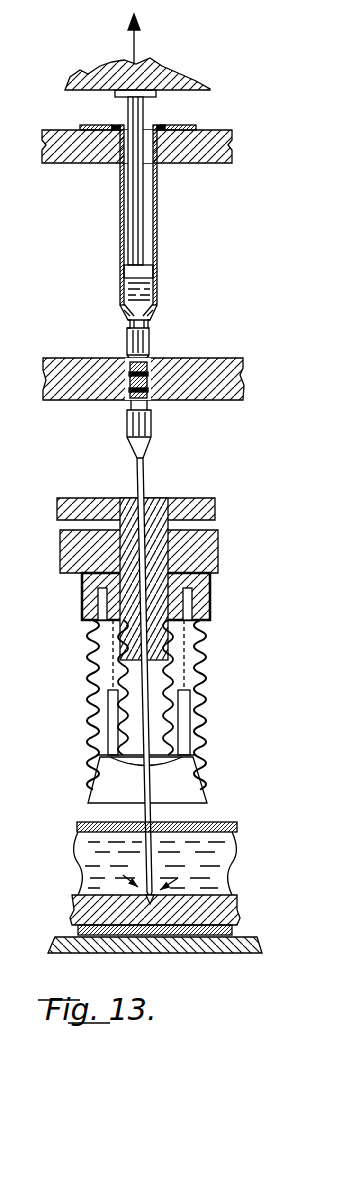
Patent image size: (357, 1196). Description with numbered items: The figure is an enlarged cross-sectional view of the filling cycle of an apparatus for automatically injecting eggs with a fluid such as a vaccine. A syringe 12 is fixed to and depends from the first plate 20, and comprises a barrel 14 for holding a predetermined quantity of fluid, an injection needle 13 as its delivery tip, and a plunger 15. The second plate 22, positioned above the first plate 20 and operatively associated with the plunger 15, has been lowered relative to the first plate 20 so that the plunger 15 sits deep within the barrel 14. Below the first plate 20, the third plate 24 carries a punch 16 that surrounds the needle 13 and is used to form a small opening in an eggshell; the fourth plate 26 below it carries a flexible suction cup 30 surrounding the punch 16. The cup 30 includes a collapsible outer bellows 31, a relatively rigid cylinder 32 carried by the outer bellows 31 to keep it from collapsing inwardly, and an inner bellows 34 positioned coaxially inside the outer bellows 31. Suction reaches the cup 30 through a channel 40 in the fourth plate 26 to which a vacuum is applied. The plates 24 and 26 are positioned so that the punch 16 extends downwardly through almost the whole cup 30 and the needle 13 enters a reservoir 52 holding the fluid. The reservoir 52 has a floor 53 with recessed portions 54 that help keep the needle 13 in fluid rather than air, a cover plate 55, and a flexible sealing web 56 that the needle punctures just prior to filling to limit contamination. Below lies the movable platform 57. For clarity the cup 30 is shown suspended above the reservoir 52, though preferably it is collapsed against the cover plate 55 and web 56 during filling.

The syringe 12 is at (162, 203).
The injection needle 13 is at (150, 860).
The barrel 14 is at (156, 300).
The plunger 15 is at (145, 240).
The punch 16 is at (142, 472).
The first plate 20 is at (212, 128).
The second plate 22 is at (178, 62).
The third plate 24 is at (212, 350).
The fourth plate 26 is at (218, 494).
The suction cup 30 is at (212, 672).
The outer bellows 31 is at (200, 716).
The cylinder 32 is at (200, 732).
The inner bellows 34 is at (100, 776).
The channel 40 is at (200, 522).
The reservoir 52 is at (75, 837).
The floor 53 is at (235, 909).
The recessed portion 54 is at (100, 893).
The cover plate 55 is at (215, 834).
The sealing web 56 is at (205, 824).
The platform 57 is at (250, 952).